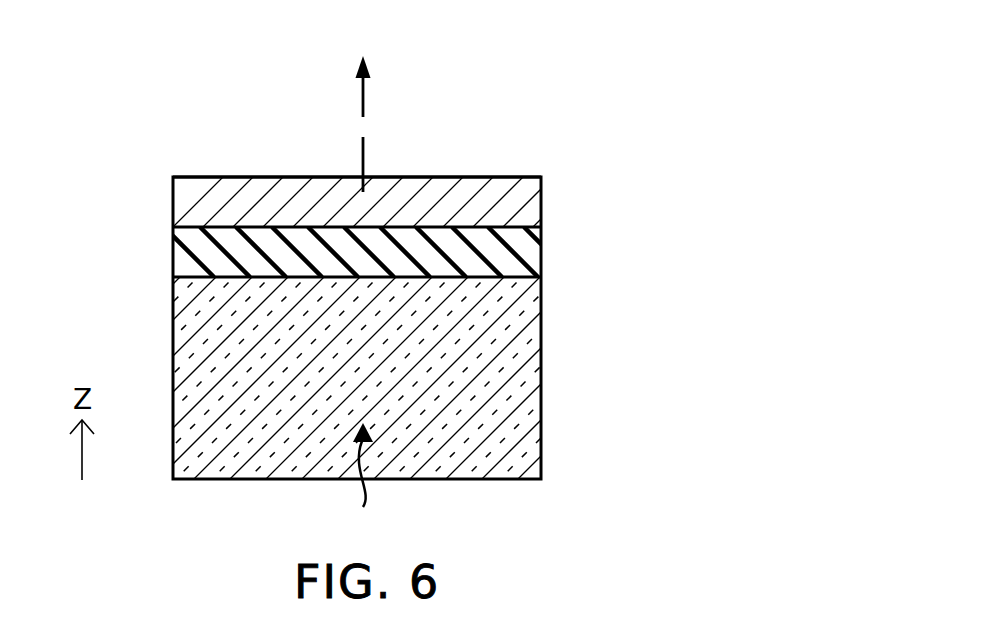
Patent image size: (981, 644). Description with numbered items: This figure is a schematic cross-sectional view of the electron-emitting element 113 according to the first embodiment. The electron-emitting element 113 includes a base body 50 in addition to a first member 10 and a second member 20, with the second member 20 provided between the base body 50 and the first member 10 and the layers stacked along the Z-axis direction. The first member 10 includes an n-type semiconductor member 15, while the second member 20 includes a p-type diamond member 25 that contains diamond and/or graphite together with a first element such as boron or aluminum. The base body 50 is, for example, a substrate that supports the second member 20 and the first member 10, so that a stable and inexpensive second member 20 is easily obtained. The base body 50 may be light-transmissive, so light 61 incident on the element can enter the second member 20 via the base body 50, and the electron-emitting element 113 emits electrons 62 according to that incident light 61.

The electron-emitting element 113 is at (369, 271).
The n-type semiconductor member 15 is at (521, 183).
The first member 10 is at (522, 212).
The second member 20 is at (522, 240).
The p-type diamond member 25 is at (521, 271).
The base body 50 is at (512, 380).
The light 61 is at (370, 497).
The electrons 62 is at (362, 92).